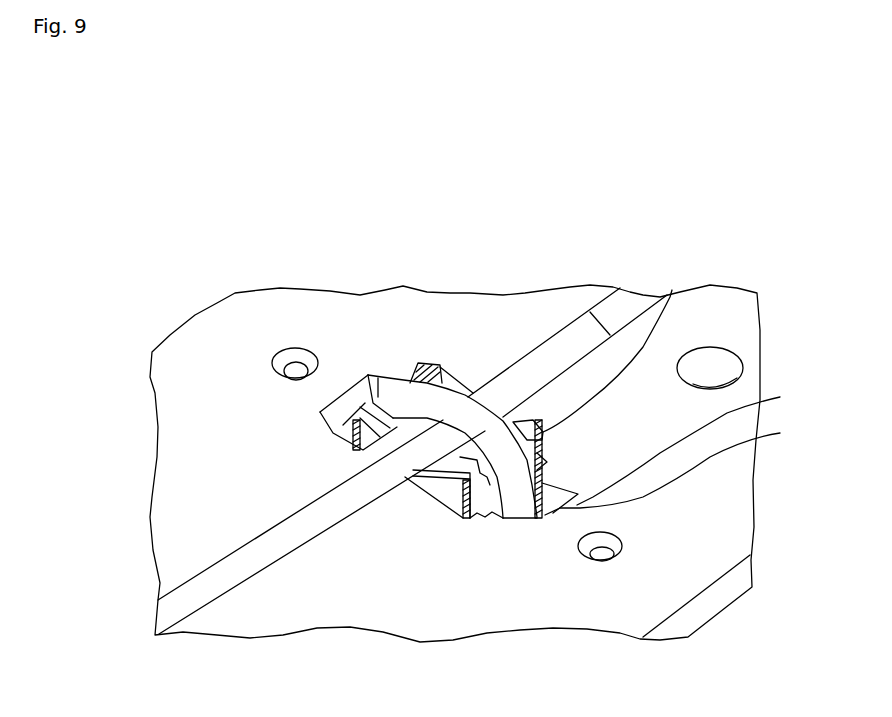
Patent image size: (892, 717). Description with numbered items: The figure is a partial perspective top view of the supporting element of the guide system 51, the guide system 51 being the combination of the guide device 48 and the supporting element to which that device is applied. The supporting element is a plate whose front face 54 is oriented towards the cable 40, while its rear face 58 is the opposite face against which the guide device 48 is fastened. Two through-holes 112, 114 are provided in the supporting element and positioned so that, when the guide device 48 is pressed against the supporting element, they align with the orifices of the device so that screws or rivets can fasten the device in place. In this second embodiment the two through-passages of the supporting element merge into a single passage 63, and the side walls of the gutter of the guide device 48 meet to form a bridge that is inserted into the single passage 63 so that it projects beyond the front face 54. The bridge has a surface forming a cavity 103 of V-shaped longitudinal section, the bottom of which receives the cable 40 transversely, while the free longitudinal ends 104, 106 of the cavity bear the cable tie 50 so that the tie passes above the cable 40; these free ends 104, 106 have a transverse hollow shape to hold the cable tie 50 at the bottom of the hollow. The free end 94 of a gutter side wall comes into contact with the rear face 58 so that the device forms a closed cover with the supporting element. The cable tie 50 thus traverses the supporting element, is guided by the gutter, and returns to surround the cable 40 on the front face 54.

The guide system 51 is at (178, 198).
The front face 54 is at (322, 313).
The rear face 58 is at (725, 608).
The through-hole 112 is at (283, 352).
The through-hole 114 is at (623, 547).
The cable 40 is at (545, 368).
The free longitudinal end 106 is at (667, 295).
The free end 94 is at (676, 397).
The single passage 63 is at (677, 468).
The cable tie 50 is at (467, 398).
The free longitudinal end 104 is at (430, 357).
The guide device 48 is at (353, 443).
The cavity 103 is at (442, 465).